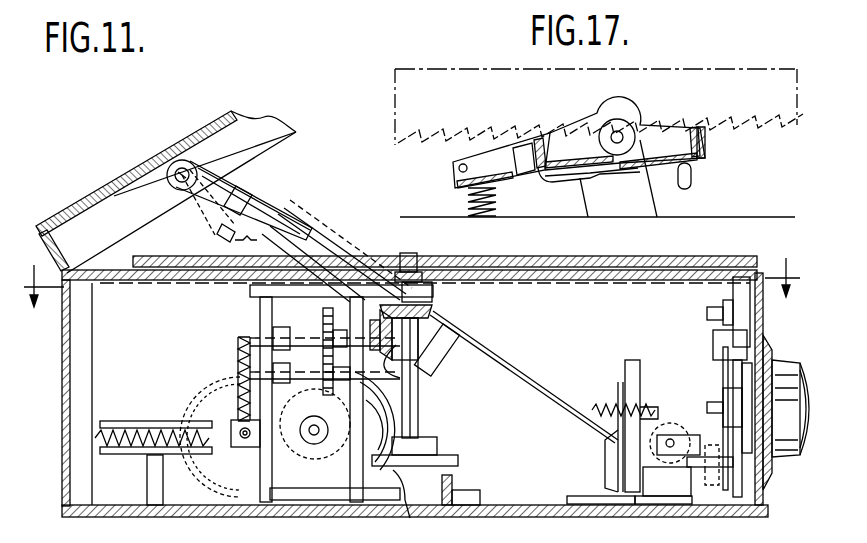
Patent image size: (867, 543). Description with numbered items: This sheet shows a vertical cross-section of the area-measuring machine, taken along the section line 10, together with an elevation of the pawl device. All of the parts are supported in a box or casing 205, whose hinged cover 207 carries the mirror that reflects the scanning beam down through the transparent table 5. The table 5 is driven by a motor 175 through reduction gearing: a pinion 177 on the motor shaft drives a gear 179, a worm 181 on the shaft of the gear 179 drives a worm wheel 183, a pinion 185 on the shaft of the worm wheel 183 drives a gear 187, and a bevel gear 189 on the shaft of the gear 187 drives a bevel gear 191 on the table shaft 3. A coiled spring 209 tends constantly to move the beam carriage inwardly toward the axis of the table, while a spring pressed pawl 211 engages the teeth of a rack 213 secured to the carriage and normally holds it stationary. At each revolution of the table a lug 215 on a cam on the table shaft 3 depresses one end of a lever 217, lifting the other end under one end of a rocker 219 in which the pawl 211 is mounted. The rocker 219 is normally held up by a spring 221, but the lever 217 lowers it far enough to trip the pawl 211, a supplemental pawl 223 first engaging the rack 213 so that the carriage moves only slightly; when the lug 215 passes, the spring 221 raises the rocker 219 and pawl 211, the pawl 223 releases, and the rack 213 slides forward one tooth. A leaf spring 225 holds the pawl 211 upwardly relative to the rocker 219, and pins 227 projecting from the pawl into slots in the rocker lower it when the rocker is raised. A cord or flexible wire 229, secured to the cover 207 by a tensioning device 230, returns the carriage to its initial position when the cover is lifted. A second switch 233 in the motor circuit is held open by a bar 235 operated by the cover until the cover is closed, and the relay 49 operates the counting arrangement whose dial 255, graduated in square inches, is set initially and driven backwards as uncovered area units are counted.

In FIG. 11, the table shaft 3 is at (420, 429).
In FIG. 11, the table 5 is at (525, 258).
In FIG. 11, the section line 10 is at (410, 296).
In FIG. 11, the relay 49 is at (640, 486).
In FIG. 11, the motor 175 is at (392, 414).
In FIG. 11, the pinion 177 is at (315, 423).
In FIG. 11, the gear 179 is at (215, 470).
In FIG. 11, the worm 181 is at (241, 426).
In FIG. 11, the worm wheel 183 is at (238, 338).
In FIG. 11, the pinion 185 is at (320, 366).
In FIG. 11, the gear 187 is at (323, 316).
In FIG. 11, the bevel gear 189 is at (412, 371).
In FIG. 11, the bevel gear 191 is at (434, 304).
In FIG. 11, the casing 205 is at (66, 381).
In FIG. 11, the hinged cover 207 is at (95, 196).
In FIG. 11, the coiled spring 209 is at (108, 455).
In FIG. 17, the pawl 211 is at (552, 138).
In FIG. 17, the rack 213 is at (720, 70).
In FIG. 11, the lug 215 is at (417, 505).
In FIG. 11, the lever 217 is at (452, 481).
In FIG. 17, the lever 217 is at (693, 184).
In FIG. 17, the rocker 219 is at (645, 140).
In FIG. 17, the spring 221 is at (468, 204).
In FIG. 17, the supplemental pawl 223 is at (703, 127).
In FIG. 17, the leaf spring 225 is at (556, 177).
In FIG. 17, the pins 227 is at (522, 150).
In FIG. 11, the cord or flexible wire 229 is at (520, 379).
In FIG. 11, the tensioning device 230 is at (268, 203).
In FIG. 11, the second switch 233 is at (630, 378).
In FIG. 11, the bar 235 is at (234, 238).
In FIG. 11, the dial 255 is at (780, 361).